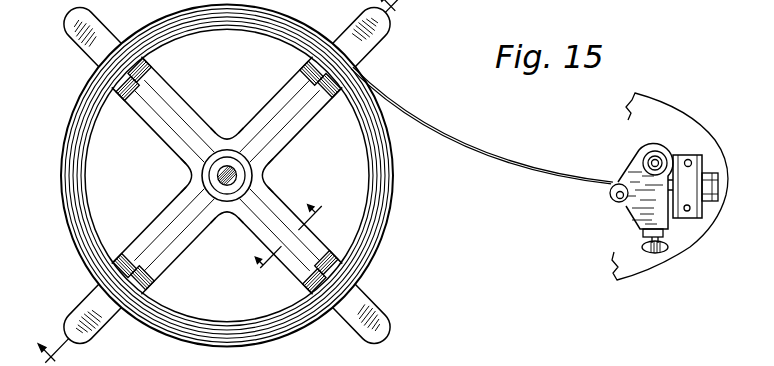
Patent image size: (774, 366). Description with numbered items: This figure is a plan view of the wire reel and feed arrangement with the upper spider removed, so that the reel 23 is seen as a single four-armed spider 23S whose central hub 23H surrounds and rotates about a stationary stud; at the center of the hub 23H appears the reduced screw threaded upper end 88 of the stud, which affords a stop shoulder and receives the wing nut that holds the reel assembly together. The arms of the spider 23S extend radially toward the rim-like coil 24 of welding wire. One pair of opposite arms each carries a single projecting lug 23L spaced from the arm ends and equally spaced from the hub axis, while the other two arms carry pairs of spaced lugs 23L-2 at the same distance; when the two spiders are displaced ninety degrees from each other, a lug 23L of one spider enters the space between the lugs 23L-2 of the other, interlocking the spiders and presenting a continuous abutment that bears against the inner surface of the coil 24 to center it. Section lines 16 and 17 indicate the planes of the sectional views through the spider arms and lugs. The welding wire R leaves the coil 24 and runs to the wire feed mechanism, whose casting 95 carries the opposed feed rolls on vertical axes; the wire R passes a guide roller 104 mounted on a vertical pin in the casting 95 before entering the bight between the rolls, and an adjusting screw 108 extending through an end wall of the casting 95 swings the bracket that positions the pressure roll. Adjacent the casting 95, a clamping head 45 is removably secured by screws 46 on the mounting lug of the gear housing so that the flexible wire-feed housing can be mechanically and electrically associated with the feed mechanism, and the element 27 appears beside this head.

The reel 23 is at (224, 183).
The spider 23S is at (88, 292).
The projecting lug 23L is at (285, 101).
The spaced lugs 23L-2 is at (311, 70).
The central hub 23H is at (228, 202).
The reduced screw threaded upper end 88 is at (230, 167).
The section line 16- 16 is at (281, 238).
The section line 17- 17 is at (70, 83).
The coil 24 is at (386, 215).
The welding wire R is at (474, 141).
The casting 95 is at (633, 170).
The guide roller 104 is at (613, 202).
The adjusting screw 108 is at (657, 251).
The clamping head 45 is at (698, 157).
The screws 46 is at (690, 208).
The shaft 27 is at (713, 180).